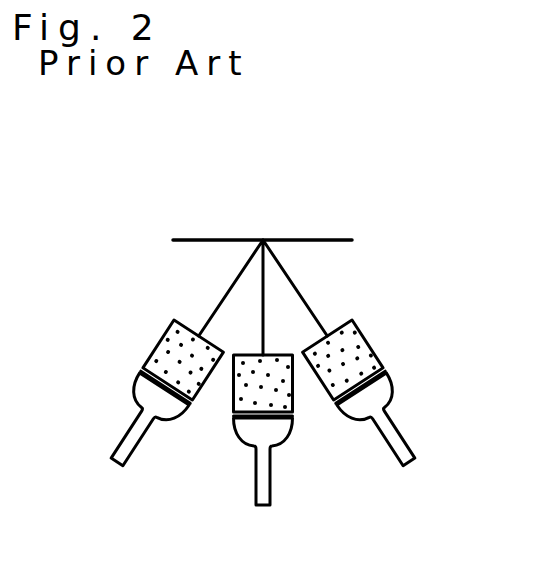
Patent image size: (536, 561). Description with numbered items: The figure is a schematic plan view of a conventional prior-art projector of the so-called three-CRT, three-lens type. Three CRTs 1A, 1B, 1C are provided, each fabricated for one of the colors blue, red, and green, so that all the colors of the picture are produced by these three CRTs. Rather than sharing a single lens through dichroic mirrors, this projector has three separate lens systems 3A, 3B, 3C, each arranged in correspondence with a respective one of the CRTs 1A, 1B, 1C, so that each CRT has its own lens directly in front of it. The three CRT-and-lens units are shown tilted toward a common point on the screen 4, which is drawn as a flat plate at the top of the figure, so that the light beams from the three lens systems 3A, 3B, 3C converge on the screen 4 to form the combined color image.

The CRT 1A is at (137, 398).
The CRT 1B is at (402, 437).
The CRT 1C is at (270, 485).
The lens system 3A is at (166, 332).
The lens system 3B is at (357, 333).
The lens system 3C is at (278, 355).
The screen 4 is at (318, 240).